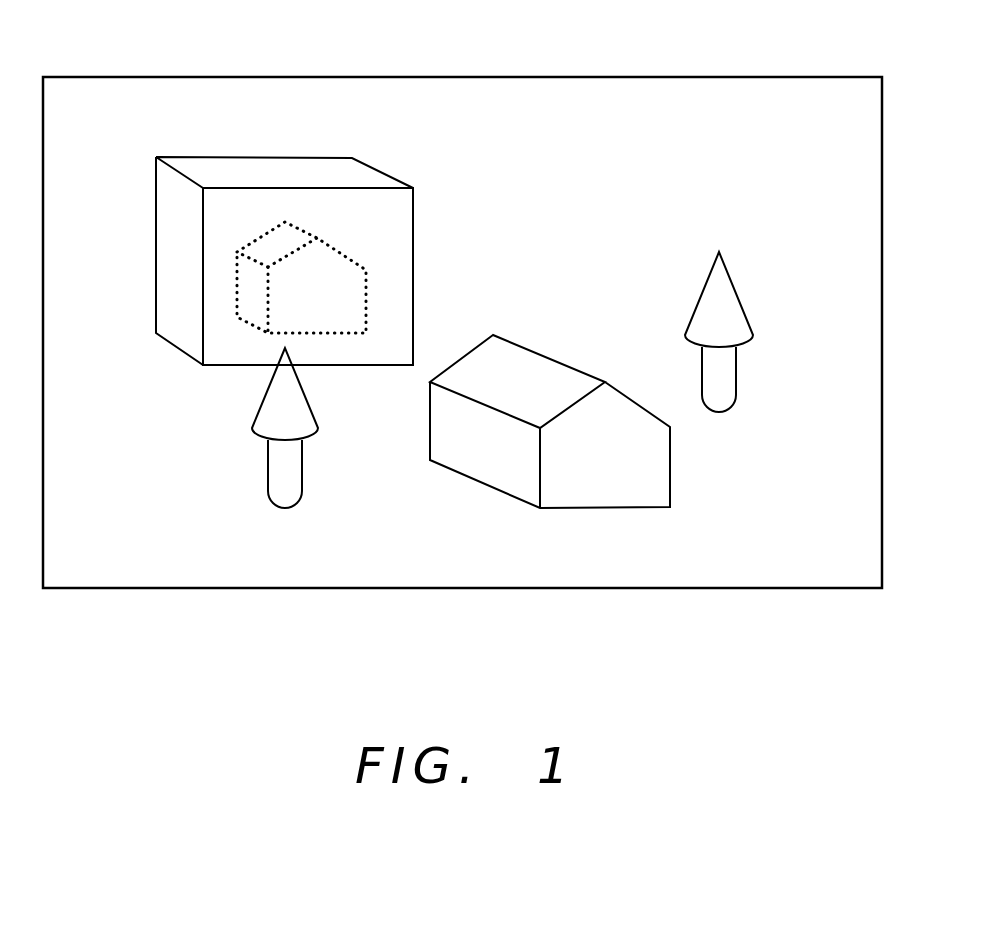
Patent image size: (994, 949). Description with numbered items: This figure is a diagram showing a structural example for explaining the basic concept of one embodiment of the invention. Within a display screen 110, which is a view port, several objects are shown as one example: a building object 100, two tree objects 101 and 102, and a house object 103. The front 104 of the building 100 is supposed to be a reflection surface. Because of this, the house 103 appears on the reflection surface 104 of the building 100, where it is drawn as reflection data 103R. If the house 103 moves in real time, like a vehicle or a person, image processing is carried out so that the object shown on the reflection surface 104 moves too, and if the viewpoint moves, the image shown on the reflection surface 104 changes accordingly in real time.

The display screen 110 is at (562, 78).
The building object 100 is at (342, 241).
The reflection surface 104 is at (380, 237).
The reflection data 103R is at (367, 293).
The house object 103 is at (486, 338).
The tree object 101 is at (258, 410).
The tree object 102 is at (737, 285).